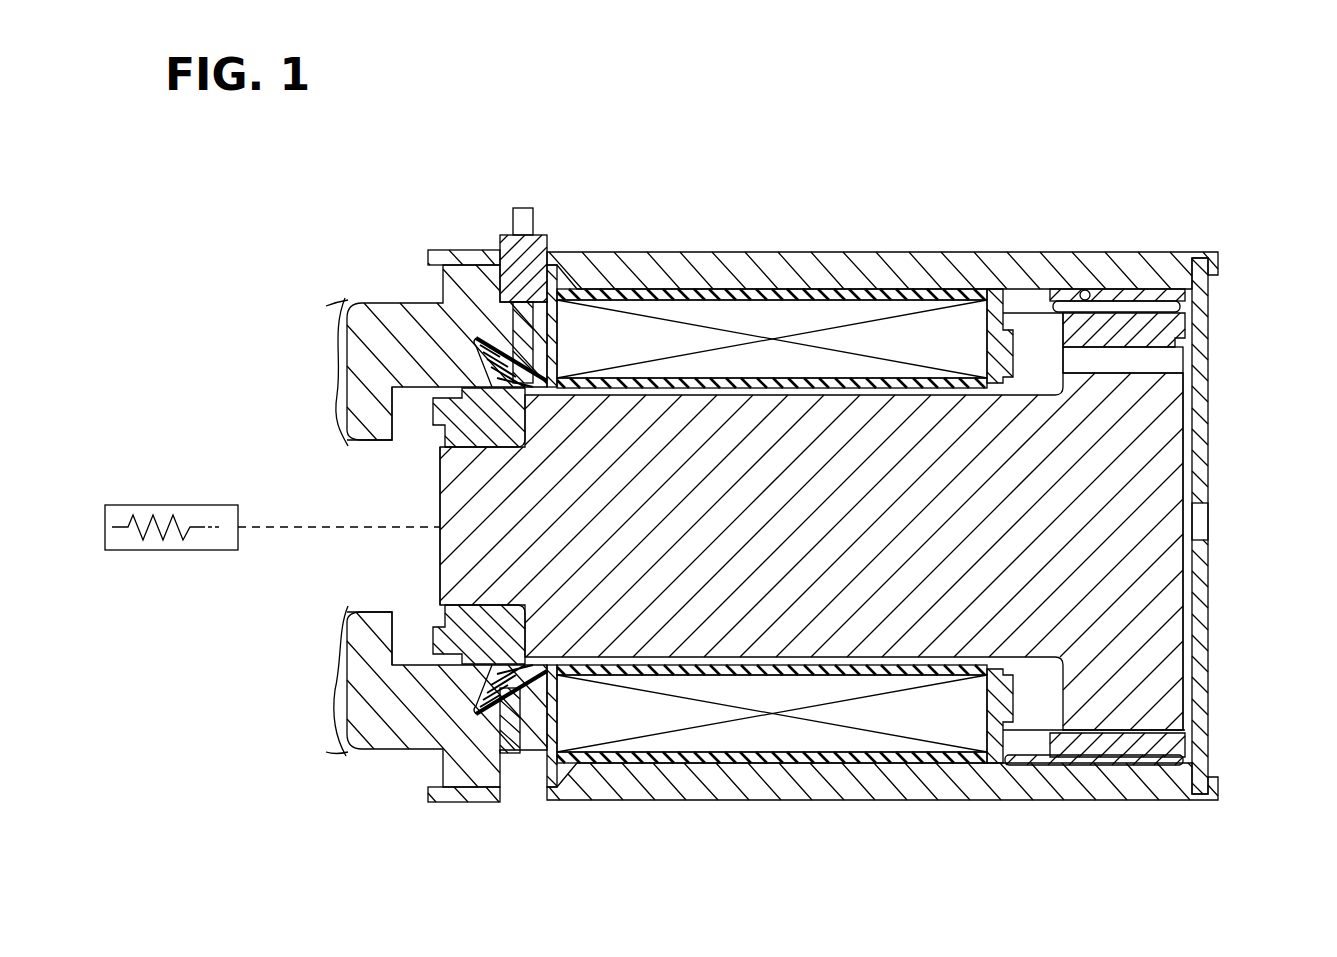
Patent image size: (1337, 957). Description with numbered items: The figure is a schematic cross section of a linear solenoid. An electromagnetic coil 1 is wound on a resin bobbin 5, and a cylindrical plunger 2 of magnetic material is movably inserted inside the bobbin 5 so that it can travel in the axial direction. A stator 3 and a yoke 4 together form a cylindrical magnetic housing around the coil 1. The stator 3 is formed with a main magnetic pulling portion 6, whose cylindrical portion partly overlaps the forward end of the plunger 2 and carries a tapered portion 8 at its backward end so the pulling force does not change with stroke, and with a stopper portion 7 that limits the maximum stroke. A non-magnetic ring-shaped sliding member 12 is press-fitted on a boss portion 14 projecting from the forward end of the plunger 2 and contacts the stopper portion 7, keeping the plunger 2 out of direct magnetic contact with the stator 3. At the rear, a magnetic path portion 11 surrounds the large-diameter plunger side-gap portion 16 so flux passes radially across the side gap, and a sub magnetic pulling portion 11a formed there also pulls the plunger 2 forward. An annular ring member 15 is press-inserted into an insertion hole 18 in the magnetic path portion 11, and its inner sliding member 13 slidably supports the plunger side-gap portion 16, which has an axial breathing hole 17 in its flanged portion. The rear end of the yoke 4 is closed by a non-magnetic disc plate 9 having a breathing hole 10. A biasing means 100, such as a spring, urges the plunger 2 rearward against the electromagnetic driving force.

The electromagnetic coil 1 is at (683, 318).
The plunger 2 is at (775, 540).
The stator 3 is at (385, 318).
The yoke 4 is at (845, 265).
The bobbin 5 is at (765, 380).
The main magnetic pulling portion 6 is at (497, 378).
The stopper portion 7 is at (375, 416).
The tapered portion 8 is at (517, 745).
The disc plate 9 is at (1205, 430).
The breathing hole 10 is at (1200, 520).
The magnetic path portion 11 is at (1100, 775).
The sub magnetic pulling portion 11a is at (1040, 290).
The sliding member 12 is at (445, 418).
The sliding member 13 is at (1205, 262).
The boss portion 14 is at (455, 527).
The annular ring member 15 is at (1130, 310).
The plunger side-gap portion 16 is at (1160, 320).
The breathing hole 17 is at (1150, 360).
The insertion hole 18 is at (1095, 300).
The biasing means 100 is at (170, 505).